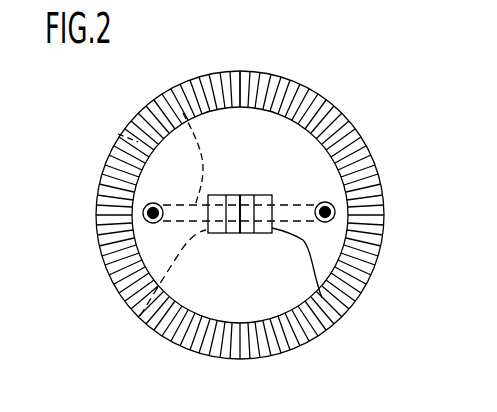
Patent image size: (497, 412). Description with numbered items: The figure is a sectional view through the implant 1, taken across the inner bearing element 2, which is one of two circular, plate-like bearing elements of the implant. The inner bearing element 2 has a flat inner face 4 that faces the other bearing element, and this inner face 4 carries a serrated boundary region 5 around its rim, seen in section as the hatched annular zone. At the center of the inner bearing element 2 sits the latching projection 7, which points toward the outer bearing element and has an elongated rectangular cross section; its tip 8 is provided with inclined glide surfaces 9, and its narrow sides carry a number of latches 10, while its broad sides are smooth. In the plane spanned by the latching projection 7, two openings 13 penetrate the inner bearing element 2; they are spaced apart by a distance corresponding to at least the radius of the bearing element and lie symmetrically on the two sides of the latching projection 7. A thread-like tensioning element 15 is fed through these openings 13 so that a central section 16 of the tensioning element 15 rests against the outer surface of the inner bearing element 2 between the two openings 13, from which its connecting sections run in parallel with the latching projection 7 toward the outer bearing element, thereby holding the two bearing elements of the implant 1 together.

The implant 1 is at (388, 144).
The inner bearing element 2 is at (320, 346).
The inner face 4 is at (228, 288).
The serrated boundary region 5 is at (245, 88).
The latching projection 7 is at (235, 186).
The tip 8 is at (248, 195).
The inclined glide surface 9 is at (322, 298).
The latch 10 is at (140, 316).
The opening 13 is at (155, 203).
The tensioning element 15 is at (118, 134).
The central section 16 is at (181, 186).